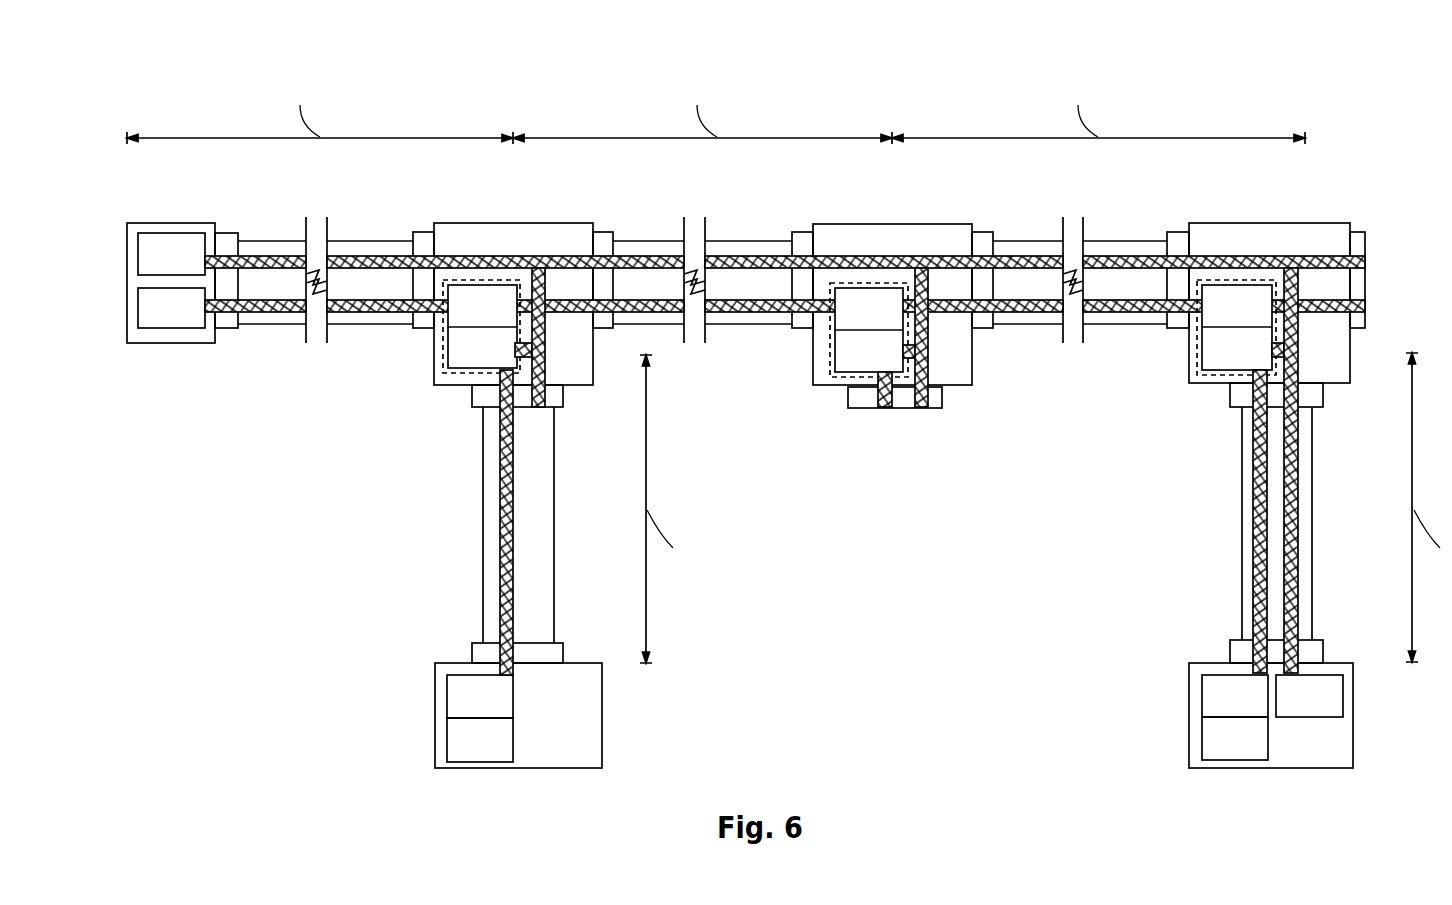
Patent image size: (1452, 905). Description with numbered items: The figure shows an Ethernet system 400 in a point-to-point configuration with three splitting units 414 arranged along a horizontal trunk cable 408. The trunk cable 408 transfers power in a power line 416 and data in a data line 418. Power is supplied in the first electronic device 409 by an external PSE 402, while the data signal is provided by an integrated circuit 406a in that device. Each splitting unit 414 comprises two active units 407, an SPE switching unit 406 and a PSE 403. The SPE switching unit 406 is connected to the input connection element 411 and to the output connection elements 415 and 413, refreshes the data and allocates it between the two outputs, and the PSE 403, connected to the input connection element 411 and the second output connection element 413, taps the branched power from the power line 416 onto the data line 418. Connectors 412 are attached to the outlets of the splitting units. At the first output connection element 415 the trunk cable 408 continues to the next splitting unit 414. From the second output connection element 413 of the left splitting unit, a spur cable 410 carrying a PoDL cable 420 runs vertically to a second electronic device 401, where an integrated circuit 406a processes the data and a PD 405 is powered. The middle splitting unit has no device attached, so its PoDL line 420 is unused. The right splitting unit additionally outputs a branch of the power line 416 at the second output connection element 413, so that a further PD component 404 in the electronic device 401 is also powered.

The cutting apparatus 400 is at (176, 65).
The second electronic device 401 is at (443, 673).
The external PSE 402 is at (196, 243).
The PSE 403 is at (462, 356).
The PD component 404 is at (1335, 695).
The PD 405 is at (457, 745).
The SPE switching unit 406 is at (472, 321).
The integrated circuit 406a is at (165, 323).
The active unit 407 is at (540, 399).
The trunk cable 408 is at (330, 334).
The first electronic device 409 is at (137, 224).
The spur cable 410 is at (478, 581).
The input connection element 411 is at (415, 326).
The connector 412 is at (420, 239).
The second output connection element 413 is at (476, 403).
The splitting unit 414 is at (515, 238).
The first output connection element 415 is at (597, 331).
The power line 416 is at (290, 257).
The data line 418 is at (270, 308).
The PoDL cable 420 is at (507, 505).